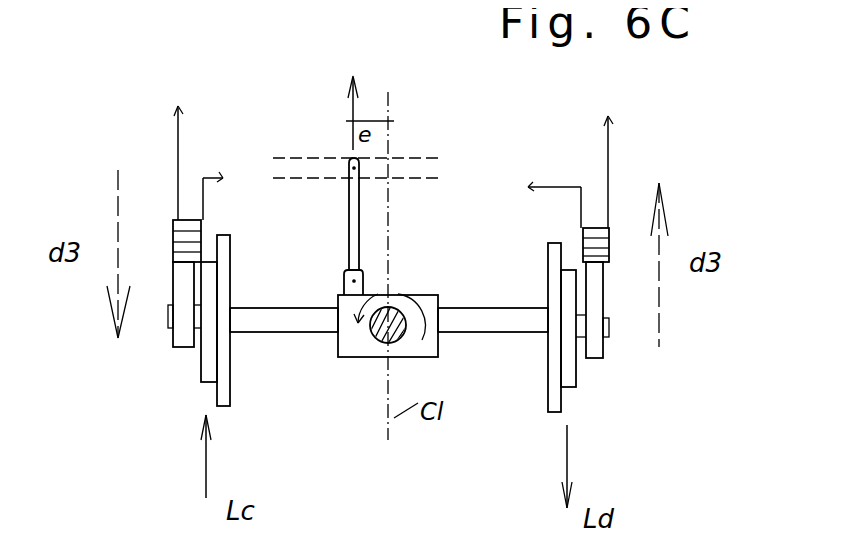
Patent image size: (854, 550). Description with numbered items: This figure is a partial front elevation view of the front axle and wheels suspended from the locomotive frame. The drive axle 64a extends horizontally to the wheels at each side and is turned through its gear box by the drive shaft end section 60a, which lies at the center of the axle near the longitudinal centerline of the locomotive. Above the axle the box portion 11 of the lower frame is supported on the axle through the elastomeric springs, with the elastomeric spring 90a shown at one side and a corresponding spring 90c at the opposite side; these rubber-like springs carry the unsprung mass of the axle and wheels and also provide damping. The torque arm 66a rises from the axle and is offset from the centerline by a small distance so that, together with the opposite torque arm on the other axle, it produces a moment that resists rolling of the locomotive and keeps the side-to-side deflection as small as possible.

The elastomeric spring 90a is at (169, 250).
The right spring unit 90c is at (610, 237).
The box portion 11 is at (615, 147).
The drive axle 64a is at (313, 333).
The drive shaft end section 60a is at (395, 312).
The torque arm 66a is at (358, 227).